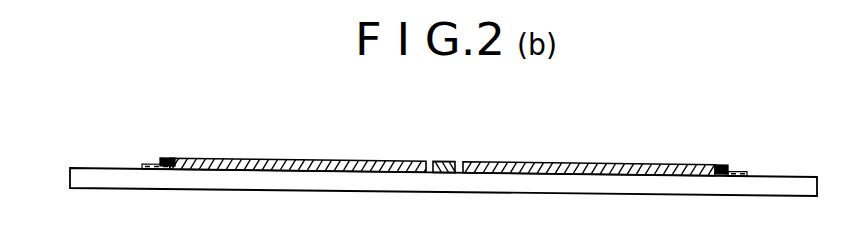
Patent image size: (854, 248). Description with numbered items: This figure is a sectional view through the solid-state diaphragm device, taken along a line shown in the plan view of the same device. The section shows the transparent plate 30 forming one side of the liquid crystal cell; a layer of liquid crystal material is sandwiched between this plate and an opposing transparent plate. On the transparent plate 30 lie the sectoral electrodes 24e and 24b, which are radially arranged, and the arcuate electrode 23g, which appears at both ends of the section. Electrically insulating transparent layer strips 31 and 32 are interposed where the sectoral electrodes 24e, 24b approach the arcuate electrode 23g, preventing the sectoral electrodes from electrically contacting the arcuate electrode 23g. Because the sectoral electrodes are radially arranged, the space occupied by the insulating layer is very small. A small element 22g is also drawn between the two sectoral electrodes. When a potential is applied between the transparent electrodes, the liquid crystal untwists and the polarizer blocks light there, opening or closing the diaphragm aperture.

The transparent plate 30 is at (308, 180).
The electrically insulating transparent layer strip 31 is at (167, 169).
The electrically insulating transparent layer strip 32 is at (722, 174).
The arcuate electrode 23g is at (167, 158).
The sectoral electrode 24e is at (299, 159).
The sectoral electrode 24b is at (578, 162).
The connecting portion 22g is at (443, 161).